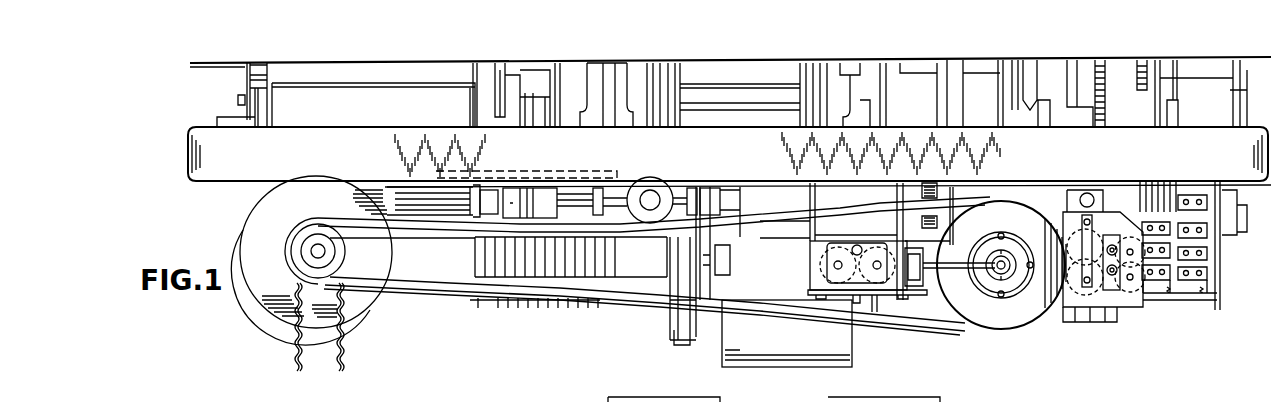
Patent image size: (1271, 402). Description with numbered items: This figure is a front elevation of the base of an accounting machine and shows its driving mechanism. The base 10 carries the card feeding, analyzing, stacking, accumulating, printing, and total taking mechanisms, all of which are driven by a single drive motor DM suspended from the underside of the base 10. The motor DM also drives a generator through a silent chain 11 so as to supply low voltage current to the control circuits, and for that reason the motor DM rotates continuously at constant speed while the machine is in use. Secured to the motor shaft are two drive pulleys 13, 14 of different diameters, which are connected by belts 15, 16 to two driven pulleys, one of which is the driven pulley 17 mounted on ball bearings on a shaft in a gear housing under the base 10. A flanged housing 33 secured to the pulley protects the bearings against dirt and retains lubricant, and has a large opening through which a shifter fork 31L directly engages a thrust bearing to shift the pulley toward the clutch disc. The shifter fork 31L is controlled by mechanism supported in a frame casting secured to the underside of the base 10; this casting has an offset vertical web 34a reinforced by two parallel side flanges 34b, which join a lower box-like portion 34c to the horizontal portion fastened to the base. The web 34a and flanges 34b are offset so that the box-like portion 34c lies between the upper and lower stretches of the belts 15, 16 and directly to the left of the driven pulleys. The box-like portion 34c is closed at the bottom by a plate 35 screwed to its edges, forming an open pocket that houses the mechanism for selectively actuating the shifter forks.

The base 10 is at (235, 168).
The drive motor DM is at (285, 297).
The silent chain 11 is at (346, 346).
The drive pulley 13 is at (310, 246).
The drive pulley 14 is at (303, 229).
The belt 15 is at (447, 235).
The belt 16 is at (418, 295).
The driven pulley 17 is at (1030, 312).
The shifter fork 31L is at (958, 272).
The flanged housing 33 is at (1012, 292).
The vertical web 34a is at (840, 228).
The side flange 34b is at (898, 195).
The box-like portion 34c is at (812, 265).
The plate 35 is at (875, 300).